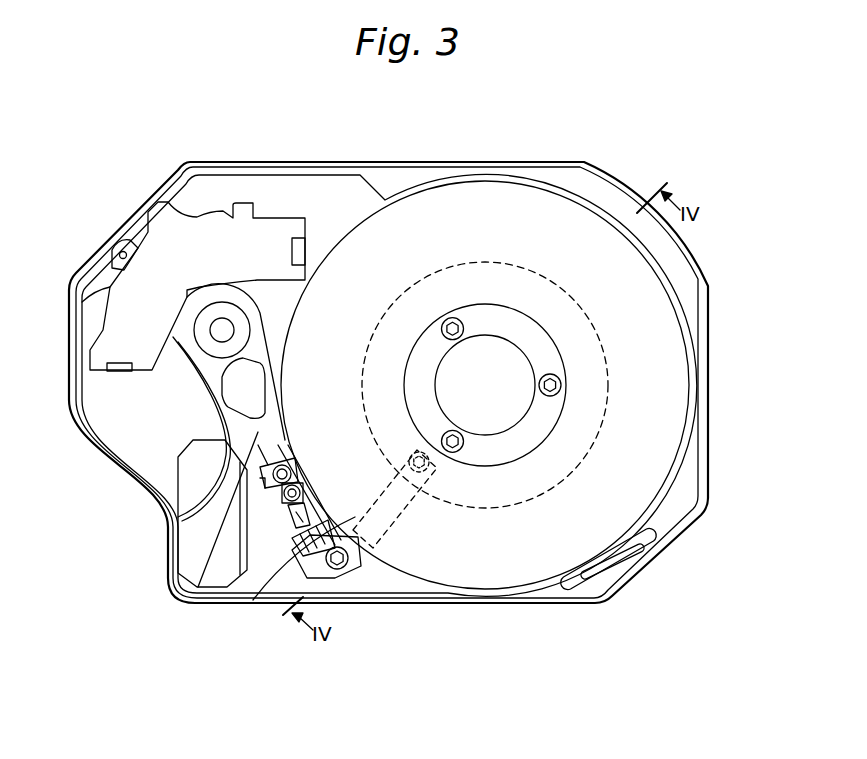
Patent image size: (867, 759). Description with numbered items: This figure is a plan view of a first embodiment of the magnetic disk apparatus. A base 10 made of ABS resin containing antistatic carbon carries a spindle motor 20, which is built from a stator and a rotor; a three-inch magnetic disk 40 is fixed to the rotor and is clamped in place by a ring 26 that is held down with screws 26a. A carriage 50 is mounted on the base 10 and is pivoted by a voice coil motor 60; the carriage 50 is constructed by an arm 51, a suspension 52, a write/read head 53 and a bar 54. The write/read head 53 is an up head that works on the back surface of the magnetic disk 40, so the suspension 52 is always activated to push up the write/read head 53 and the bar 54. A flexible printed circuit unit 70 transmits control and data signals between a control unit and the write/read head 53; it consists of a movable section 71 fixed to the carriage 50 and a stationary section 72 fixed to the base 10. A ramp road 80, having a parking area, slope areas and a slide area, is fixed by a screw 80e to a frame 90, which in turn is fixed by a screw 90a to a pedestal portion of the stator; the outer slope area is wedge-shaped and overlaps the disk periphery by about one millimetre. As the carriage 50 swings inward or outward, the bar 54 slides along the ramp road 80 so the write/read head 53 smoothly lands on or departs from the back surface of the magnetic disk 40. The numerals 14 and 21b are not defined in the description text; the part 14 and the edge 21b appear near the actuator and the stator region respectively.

The base 10 is at (195, 193).
The actuator arm 14 is at (205, 360).
The spindle motor 20 is at (543, 277).
The disk clamp edge 21b is at (583, 445).
The ring 26 is at (545, 352).
The screws 26a is at (562, 384).
The magnetic disk 40 is at (637, 293).
The carriage 50 is at (239, 580).
The arm 51 is at (258, 432).
The suspension 52 is at (283, 478).
The write/read head 53 is at (300, 525).
The bar 54 is at (312, 550).
The voice coil motor 60 is at (137, 300).
The flexible printed circuit unit 70 is at (151, 493).
The movable section 71 is at (207, 400).
The stationary section 72 is at (203, 525).
The ramp road 80 is at (349, 572).
The screw 80e is at (337, 550).
The frame 90 is at (388, 503).
The screw 90a is at (427, 467).